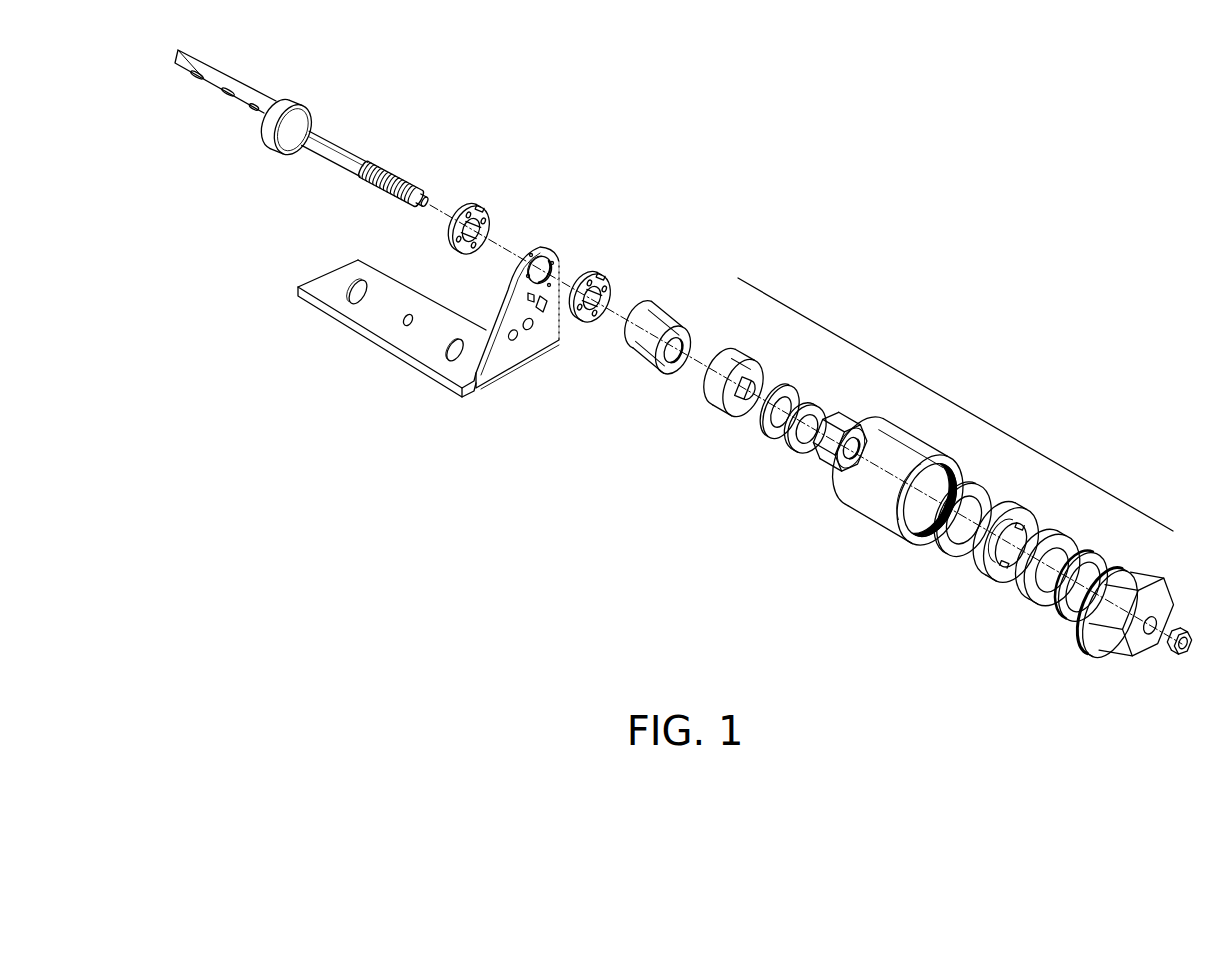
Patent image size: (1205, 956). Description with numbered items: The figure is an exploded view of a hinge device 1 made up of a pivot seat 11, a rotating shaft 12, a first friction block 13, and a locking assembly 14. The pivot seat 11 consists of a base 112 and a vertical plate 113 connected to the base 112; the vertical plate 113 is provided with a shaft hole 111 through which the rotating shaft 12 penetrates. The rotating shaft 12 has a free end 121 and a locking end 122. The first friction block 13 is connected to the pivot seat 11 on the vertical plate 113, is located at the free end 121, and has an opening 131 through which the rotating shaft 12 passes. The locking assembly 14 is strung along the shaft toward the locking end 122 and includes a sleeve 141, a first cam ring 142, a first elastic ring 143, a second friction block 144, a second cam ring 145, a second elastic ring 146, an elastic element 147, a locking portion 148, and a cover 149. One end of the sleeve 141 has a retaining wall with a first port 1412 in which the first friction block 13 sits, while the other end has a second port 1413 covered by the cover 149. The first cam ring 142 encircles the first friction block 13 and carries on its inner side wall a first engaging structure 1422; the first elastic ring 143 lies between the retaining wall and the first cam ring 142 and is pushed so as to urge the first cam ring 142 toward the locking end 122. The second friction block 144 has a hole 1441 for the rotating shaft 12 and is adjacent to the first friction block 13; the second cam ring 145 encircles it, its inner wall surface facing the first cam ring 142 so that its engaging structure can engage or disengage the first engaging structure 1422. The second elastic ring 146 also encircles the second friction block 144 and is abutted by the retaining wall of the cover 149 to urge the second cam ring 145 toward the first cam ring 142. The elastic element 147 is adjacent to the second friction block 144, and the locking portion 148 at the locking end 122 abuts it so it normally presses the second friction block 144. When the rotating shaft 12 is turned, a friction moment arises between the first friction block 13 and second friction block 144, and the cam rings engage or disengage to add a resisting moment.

The hinge device 1 is at (959, 157).
The pivot seat 11 is at (420, 314).
The shaft hole 111 is at (553, 270).
The base 112 is at (402, 338).
The vertical plate 113 is at (533, 330).
The rotating shaft 12 is at (338, 146).
The free end 121 is at (231, 80).
The locking end 122 is at (397, 180).
The first friction block 13 is at (658, 346).
The opening 131 is at (679, 374).
The locking assembly 14 is at (955, 404).
The sleeve 141 is at (893, 501).
The first port 1412 is at (853, 488).
The second port 1413 is at (927, 547).
The first cam ring 142 is at (1005, 551).
The first engaging structure 1422 is at (1007, 585).
The first elastic ring 143 is at (985, 497).
The second friction block 144 is at (733, 384).
The hole 1441 is at (745, 418).
The second cam ring 145 is at (1057, 530).
The second elastic ring 146 is at (1103, 550).
The elastic element 147 is at (815, 410).
The locking portion 148 is at (848, 420).
The cover 149 is at (1142, 580).